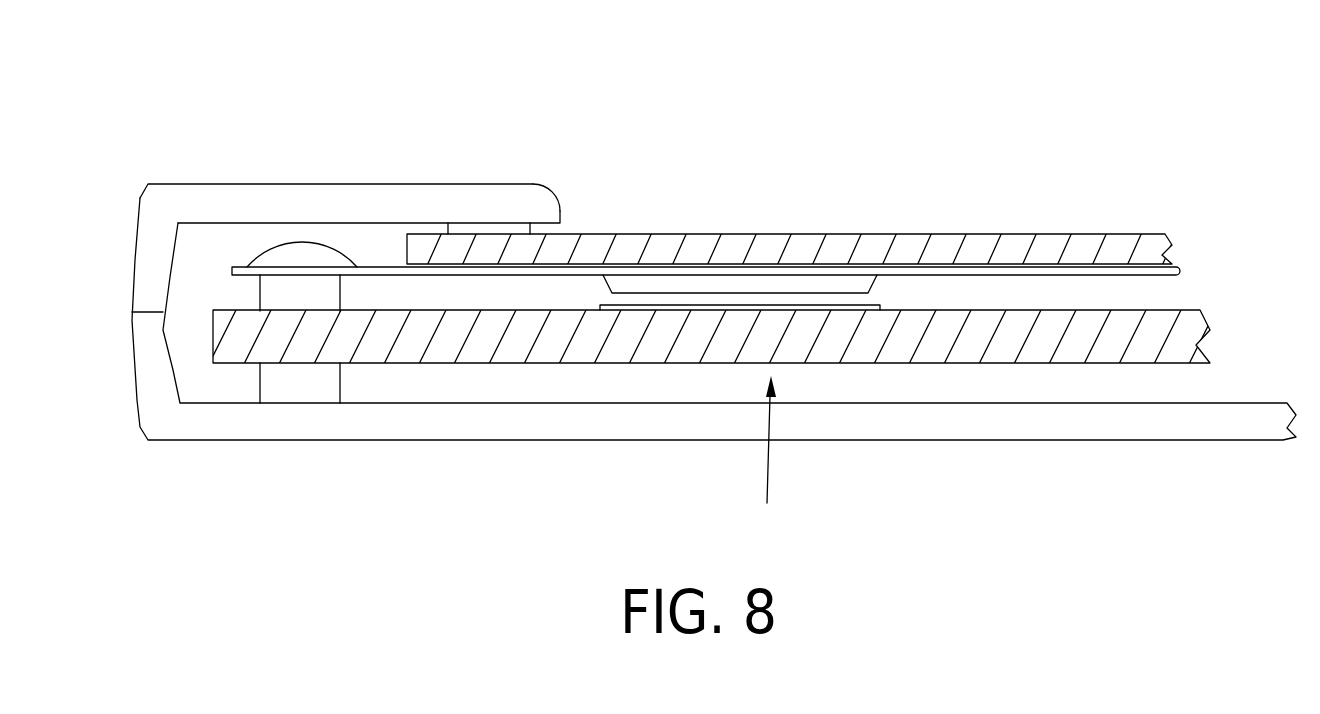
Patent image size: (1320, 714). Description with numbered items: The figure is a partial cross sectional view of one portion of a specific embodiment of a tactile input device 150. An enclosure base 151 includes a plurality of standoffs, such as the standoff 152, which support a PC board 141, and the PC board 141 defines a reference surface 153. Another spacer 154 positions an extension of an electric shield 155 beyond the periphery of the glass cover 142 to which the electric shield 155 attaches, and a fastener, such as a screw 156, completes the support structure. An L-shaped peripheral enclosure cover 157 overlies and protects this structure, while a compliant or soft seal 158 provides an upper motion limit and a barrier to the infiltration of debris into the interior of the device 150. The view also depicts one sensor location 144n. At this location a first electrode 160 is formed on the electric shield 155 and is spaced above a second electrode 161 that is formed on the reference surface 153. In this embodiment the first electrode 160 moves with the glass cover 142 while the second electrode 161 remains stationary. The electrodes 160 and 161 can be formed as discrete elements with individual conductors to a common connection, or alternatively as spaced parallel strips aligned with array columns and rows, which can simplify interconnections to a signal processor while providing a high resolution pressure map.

The device 150 is at (648, 20).
The enclosure base 151 is at (510, 420).
The standoff 152 is at (298, 378).
The reference surface 153 is at (1046, 320).
The spacer 154 is at (288, 290).
The electric shield 155 is at (388, 275).
The screw 156 is at (310, 253).
The peripheral enclosure cover 157 is at (494, 197).
The soft seal 158 is at (519, 223).
The first electrode 160 is at (718, 275).
The second electrode 161 is at (680, 308).
The PC board 141 is at (918, 333).
The glass cover 142 is at (852, 233).
The sensor location 144n is at (767, 459).